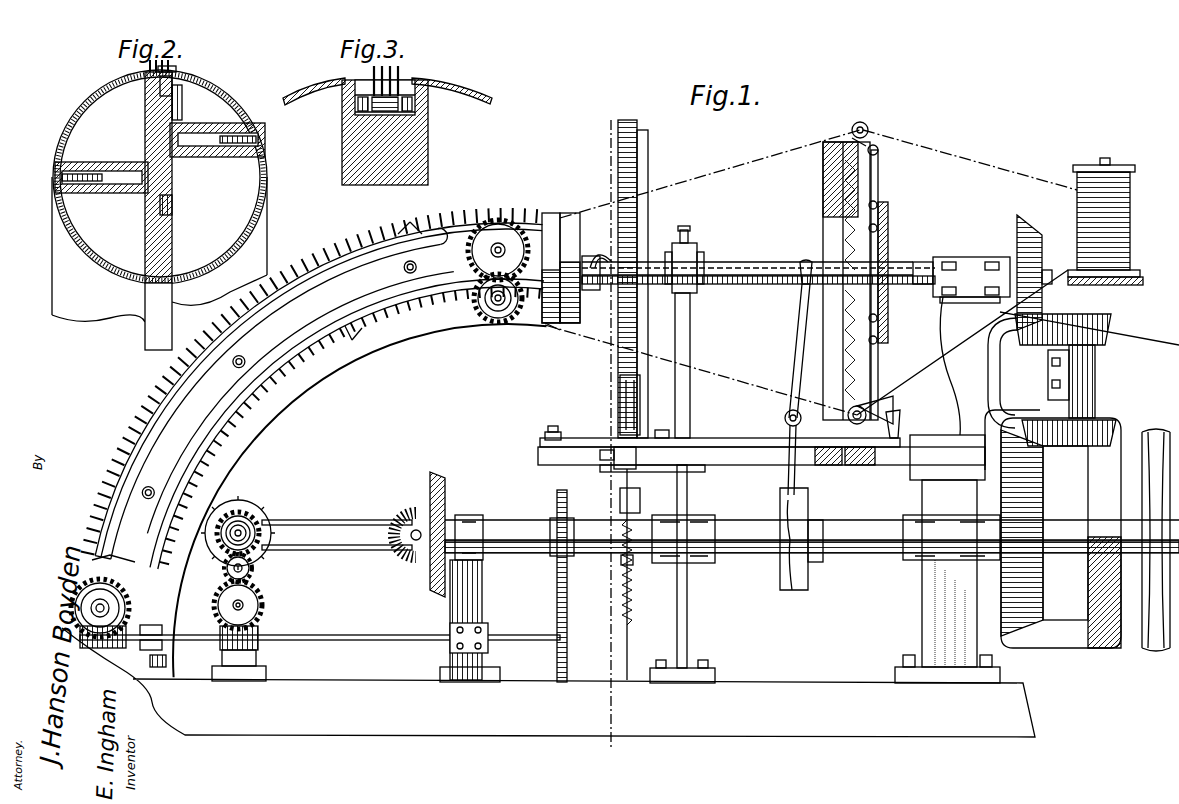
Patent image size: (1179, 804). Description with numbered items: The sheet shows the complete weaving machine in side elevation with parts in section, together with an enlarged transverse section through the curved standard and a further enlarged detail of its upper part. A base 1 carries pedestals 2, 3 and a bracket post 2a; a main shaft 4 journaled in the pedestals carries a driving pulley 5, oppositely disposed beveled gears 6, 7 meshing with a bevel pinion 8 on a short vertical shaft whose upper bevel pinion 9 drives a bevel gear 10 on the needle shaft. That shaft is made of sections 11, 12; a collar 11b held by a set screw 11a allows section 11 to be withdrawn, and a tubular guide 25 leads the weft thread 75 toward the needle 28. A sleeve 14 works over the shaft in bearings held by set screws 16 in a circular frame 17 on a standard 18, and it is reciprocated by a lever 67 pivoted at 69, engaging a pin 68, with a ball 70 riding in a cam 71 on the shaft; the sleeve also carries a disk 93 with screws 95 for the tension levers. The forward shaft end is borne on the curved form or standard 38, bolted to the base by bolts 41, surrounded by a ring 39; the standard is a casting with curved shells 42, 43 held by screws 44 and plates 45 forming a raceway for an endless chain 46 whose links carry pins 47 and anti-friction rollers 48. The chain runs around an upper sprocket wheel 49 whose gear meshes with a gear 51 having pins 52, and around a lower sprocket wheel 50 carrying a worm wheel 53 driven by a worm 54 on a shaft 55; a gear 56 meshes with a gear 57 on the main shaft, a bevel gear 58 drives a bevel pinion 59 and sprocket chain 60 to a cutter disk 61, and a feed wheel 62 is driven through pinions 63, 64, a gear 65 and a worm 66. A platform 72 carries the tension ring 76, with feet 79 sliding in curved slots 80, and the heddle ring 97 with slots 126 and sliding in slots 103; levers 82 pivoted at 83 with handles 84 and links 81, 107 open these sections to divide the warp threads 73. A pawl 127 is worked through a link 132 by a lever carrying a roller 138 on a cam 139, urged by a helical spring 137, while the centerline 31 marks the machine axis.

In FIG. 1, the base 1 is at (805, 665).
In FIG. 1, the pedestal 2 is at (232, 333).
In FIG. 1, the bracket post 2a is at (470, 580).
In FIG. 1, the pedestal 3 is at (687, 590).
In FIG. 1, the main shaft 4 is at (870, 520).
In FIG. 1, the driving pulley 5 is at (1150, 430).
In FIG. 1, the beveled gear 6 is at (1043, 475).
In FIG. 1, the beveled gear 7 is at (1088, 597).
In FIG. 1, the bevel pinion 8 is at (1075, 440).
In FIG. 1, the bevel pinion 9 is at (1105, 340).
In FIG. 1, the bevel gear 10 is at (1032, 218).
In FIG. 1, the shaft section 11 is at (922, 262).
In FIG. 1, the set screw 11a is at (925, 300).
In FIG. 1, the collar 11b is at (945, 257).
In FIG. 1, the shaft section 12 is at (598, 290).
In FIG. 1, the sleeve 14 is at (770, 262).
In FIG. 1, the set screw 16 is at (688, 232).
In FIG. 1, the circular frame 17 is at (697, 252).
In FIG. 1, the standard 18 is at (690, 335).
In FIG. 1, the tubular guide 25 is at (602, 250).
In FIG. 1, the needle 28 is at (570, 213).
In FIG. 1, the center line 31 is at (604, 363).
In FIG. 2, the curved form or standard 38 is at (163, 302).
In FIG. 3, the curved form or standard 38 is at (345, 160).
In FIG. 1, the curved form or standard 38 is at (548, 323).
In FIG. 1, the ring 39 is at (550, 338).
In FIG. 1, the bolts 41 is at (166, 661).
In FIG. 2, the curved shell 42 is at (60, 125).
In FIG. 3, the curved shell 42 is at (314, 88).
In FIG. 2, the curved shell 43 is at (248, 216).
In FIG. 3, the curved shell 43 is at (453, 86).
In FIG. 2, the screws 44 is at (58, 177).
In FIG. 2, the plate 45 is at (196, 104).
In FIG. 3, the plate 45 is at (428, 150).
In FIG. 2, the endless chain 46 is at (160, 95).
In FIG. 3, the endless chain 46 is at (398, 92).
In FIG. 1, the endless chain 46 is at (372, 230).
In FIG. 2, the pins 47 is at (150, 78).
In FIG. 3, the pins 47 is at (372, 72).
In FIG. 1, the pins 47 is at (382, 281).
In FIG. 2, the anti-friction rollers 48 is at (178, 72).
In FIG. 3, the anti-friction rollers 48 is at (342, 110).
In FIG. 1, the sprocket wheel 49 is at (500, 232).
In FIG. 1, the sprocket wheel 50 is at (110, 580).
In FIG. 1, the gear 51 is at (488, 306).
In FIG. 1, the pins 52 is at (505, 315).
In FIG. 1, the worm wheel 53 is at (130, 600).
In FIG. 1, the worm 54 is at (110, 648).
In FIG. 1, the shaft 55 is at (320, 630).
In FIG. 1, the gear 56 is at (567, 605).
In FIG. 1, the gear 57 is at (555, 505).
In FIG. 1, the bevel gear 58 is at (445, 475).
In FIG. 1, the bevel pinion 59 is at (405, 560).
In FIG. 1, the sprocket chain 60 is at (345, 520).
In FIG. 1, the cutter disk 61 is at (258, 512).
In FIG. 1, the feed wheel 62 is at (245, 512).
In FIG. 1, the pinion 63 is at (228, 540).
In FIG. 1, the pinion 64 is at (254, 568).
In FIG. 1, the gear 65 is at (252, 597).
In FIG. 1, the worm 66 is at (258, 630).
In FIG. 1, the lever 67 is at (800, 340).
In FIG. 1, the pin 68 is at (806, 284).
In FIG. 1, the pivot 69 is at (785, 418).
In FIG. 1, the ball 70 is at (780, 495).
In FIG. 1, the cam 71 is at (780, 565).
In FIG. 1, the platform 72 is at (735, 470).
In FIG. 1, the warp threads 73 is at (724, 160).
In FIG. 1, the weft thread 75 is at (1120, 308).
In FIG. 1, the circular frame or ring 76 is at (823, 222).
In FIG. 1, the foot 79 is at (828, 465).
In FIG. 1, the curved slot 80 is at (852, 465).
In FIG. 1, the link 81 is at (866, 428).
In FIG. 1, the lever 82 is at (733, 438).
In FIG. 1, the pivot 83 is at (553, 426).
In FIG. 1, the operating handle 84 is at (900, 415).
In FIG. 1, the disk 93 is at (888, 228).
In FIG. 1, the screws 95 is at (878, 180).
In FIG. 1, the circular frame or ring 97 is at (648, 160).
In FIG. 1, the curved slot 103 is at (606, 460).
In FIG. 1, the link 107 is at (662, 430).
In FIG. 1, the slot 126 is at (628, 120).
In FIG. 1, the pawl 127 is at (620, 392).
In FIG. 1, the link 132 is at (645, 468).
In FIG. 1, the helical spring 137 is at (632, 612).
In FIG. 1, the anti-friction roller 138 is at (640, 495).
In FIG. 1, the cam 139 is at (633, 560).